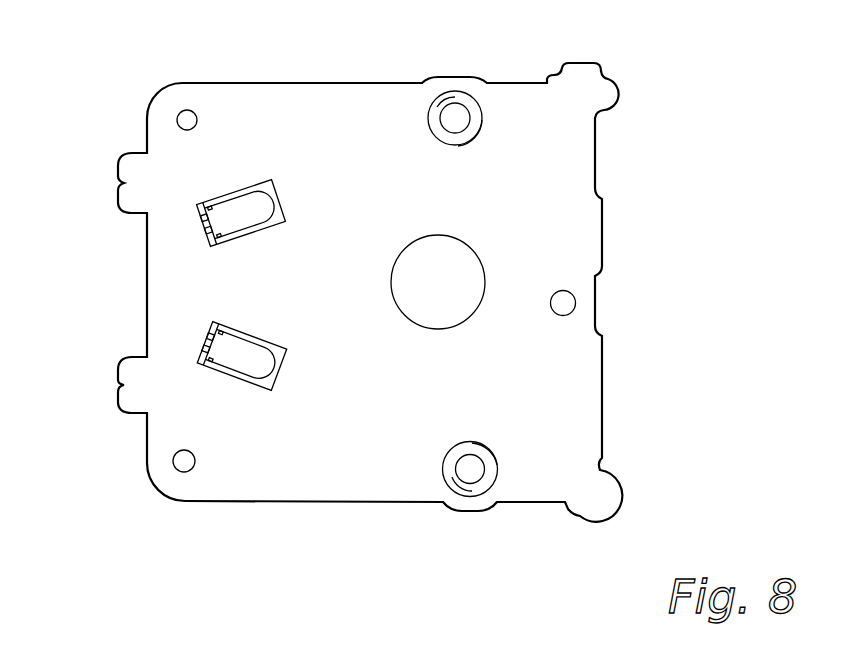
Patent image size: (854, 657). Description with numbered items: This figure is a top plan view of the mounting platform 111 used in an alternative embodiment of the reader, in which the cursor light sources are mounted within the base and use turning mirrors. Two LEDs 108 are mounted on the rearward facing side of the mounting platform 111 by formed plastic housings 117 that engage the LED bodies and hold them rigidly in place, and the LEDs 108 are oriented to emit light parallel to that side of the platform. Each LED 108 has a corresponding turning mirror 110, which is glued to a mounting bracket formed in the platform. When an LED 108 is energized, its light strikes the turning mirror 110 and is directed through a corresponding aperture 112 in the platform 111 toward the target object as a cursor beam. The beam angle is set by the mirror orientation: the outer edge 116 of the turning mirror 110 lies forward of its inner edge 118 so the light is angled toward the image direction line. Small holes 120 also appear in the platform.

The LED 108 is at (235, 192).
The turning mirror 110 is at (458, 118).
The mounting platform 111 is at (253, 236).
The aperture 112 is at (474, 113).
The outer edge 116 is at (445, 110).
The formed plastic housing 117 is at (256, 186).
The inner edge 118 is at (458, 146).
The mounting hole 120 is at (180, 112).